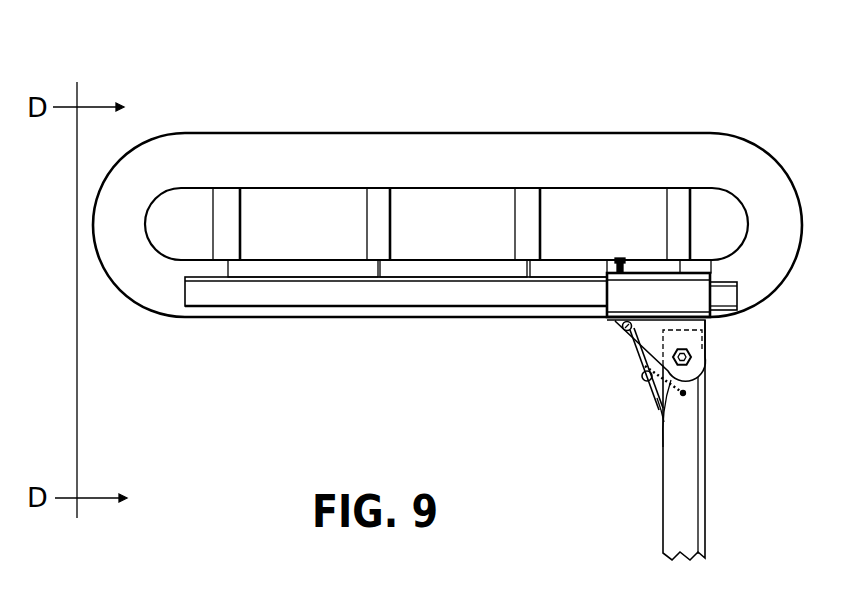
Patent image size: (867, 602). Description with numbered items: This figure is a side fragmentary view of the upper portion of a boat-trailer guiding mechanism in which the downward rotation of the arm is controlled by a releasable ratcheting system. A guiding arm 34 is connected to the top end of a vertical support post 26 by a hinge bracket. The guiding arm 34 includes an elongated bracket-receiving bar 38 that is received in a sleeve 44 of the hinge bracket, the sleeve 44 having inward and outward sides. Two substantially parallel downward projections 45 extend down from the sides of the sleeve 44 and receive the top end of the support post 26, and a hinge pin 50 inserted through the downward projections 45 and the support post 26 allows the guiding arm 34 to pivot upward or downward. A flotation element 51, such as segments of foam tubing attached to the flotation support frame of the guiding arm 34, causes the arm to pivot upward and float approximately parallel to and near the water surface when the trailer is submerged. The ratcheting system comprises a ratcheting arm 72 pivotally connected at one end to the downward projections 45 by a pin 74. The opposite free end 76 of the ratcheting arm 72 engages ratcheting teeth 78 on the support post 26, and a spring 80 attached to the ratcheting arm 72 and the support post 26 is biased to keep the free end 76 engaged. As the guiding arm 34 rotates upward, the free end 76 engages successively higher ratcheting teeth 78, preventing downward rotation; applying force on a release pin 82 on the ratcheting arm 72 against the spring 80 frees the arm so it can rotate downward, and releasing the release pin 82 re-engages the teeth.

The guiding arm 34 is at (310, 108).
The flotation element 51 is at (143, 280).
The bracket-receiving bar 38 is at (278, 292).
The sleeve 44 is at (687, 292).
The downward projections 45 is at (690, 323).
The hinge pin 50 is at (692, 357).
The support post 26 is at (688, 512).
The pin 74 is at (622, 331).
The ratcheting arm 72 is at (632, 352).
The release pin 82 is at (641, 379).
The free end 76 is at (661, 405).
The ratcheting teeth 78 is at (663, 420).
The spring 80 is at (663, 436).